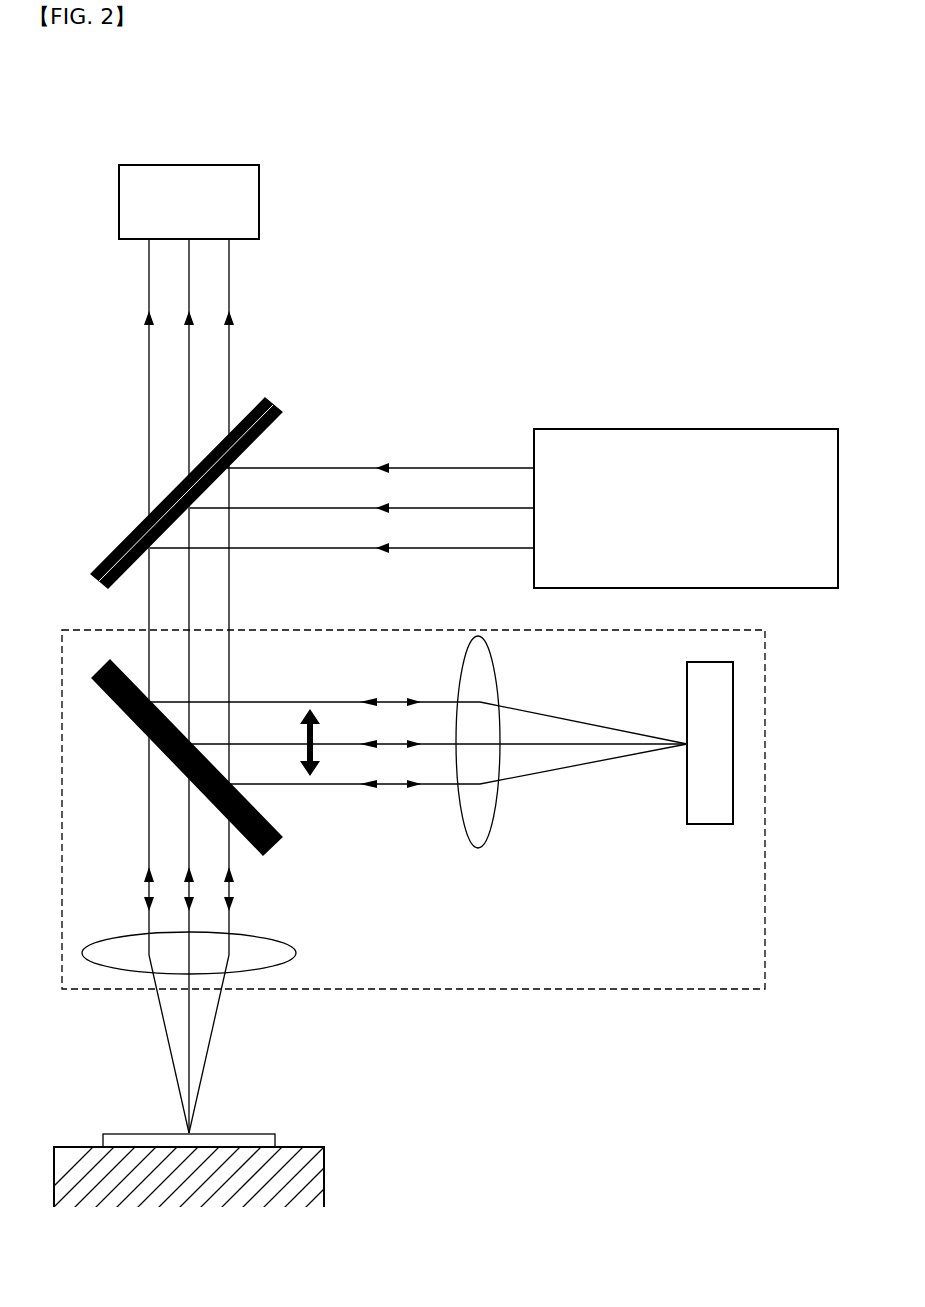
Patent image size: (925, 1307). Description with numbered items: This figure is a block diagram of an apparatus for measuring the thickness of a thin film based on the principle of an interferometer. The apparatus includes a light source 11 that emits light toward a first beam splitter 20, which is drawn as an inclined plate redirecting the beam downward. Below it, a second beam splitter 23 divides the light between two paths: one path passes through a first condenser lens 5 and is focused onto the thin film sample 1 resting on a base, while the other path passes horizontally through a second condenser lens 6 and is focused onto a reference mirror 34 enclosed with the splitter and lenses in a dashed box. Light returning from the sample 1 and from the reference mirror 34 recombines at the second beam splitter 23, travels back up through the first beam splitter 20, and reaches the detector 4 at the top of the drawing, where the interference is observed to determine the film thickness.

The object to be measured 1 is at (236, 1133).
The detector 4 is at (188, 165).
The first condenser lens 5 is at (296, 950).
The second condenser lens 6 is at (478, 848).
The light source 11 is at (685, 429).
The first beam splitter 20 is at (280, 410).
The second beam splitter 23 is at (118, 706).
The reference mirror 34 is at (733, 744).